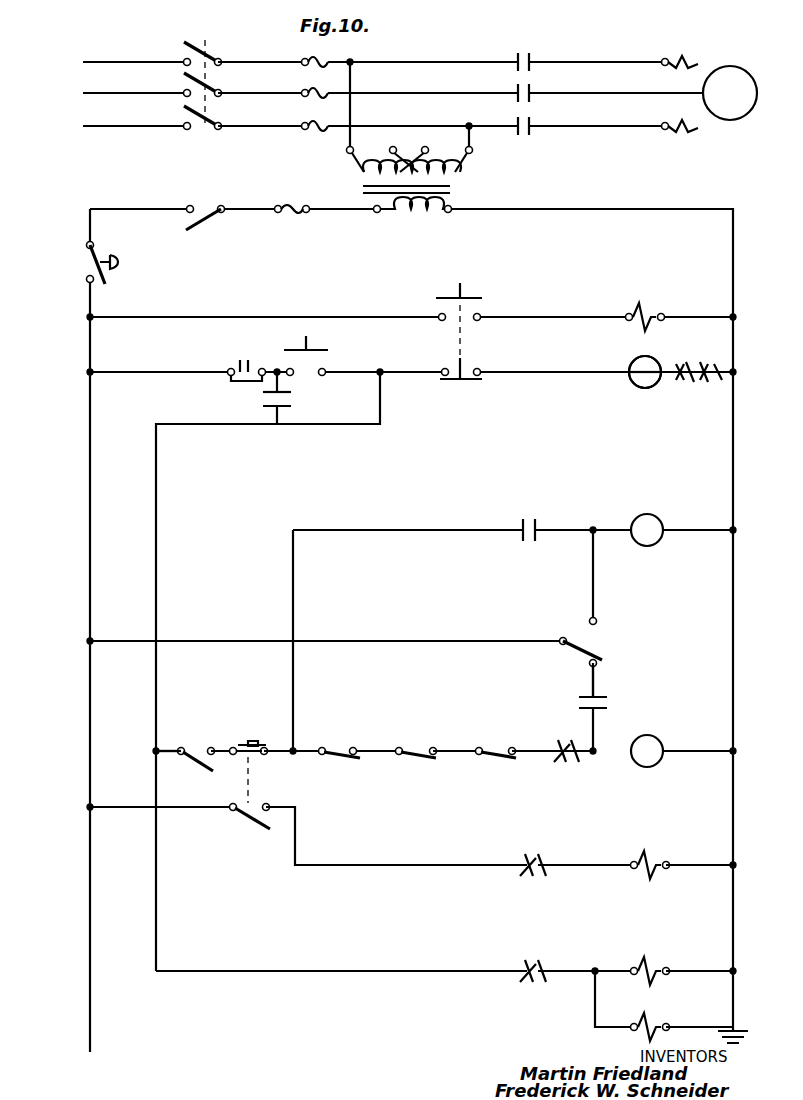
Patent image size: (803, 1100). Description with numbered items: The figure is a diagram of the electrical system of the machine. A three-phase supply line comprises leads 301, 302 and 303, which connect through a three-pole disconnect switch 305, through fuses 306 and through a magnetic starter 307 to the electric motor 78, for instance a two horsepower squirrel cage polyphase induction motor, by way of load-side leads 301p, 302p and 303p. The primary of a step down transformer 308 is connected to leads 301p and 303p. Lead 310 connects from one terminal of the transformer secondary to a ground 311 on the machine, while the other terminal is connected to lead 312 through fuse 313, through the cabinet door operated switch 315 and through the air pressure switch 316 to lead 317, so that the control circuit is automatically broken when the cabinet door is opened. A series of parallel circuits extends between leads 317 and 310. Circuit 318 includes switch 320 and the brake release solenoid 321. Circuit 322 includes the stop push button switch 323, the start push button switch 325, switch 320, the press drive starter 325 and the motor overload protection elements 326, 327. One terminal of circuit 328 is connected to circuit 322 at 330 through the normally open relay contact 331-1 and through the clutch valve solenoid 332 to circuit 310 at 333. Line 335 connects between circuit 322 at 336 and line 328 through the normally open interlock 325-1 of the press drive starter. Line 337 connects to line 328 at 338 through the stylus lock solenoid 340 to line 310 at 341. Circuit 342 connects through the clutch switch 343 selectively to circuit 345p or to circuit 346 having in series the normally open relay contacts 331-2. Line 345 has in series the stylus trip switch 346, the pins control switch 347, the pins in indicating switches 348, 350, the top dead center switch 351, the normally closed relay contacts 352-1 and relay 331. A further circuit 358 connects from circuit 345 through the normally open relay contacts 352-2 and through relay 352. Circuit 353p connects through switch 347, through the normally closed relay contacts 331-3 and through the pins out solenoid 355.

The lead 301 is at (106, 62).
The lead 302 is at (98, 93).
The lead 303 is at (98, 126).
The three-pole disconnect switch 305 is at (205, 40).
The fuses 306 is at (293, 124).
The lead 301' 301p is at (423, 47).
The lead 302' 302p is at (423, 80).
The lead 303' 303p is at (423, 113).
The magnetic starter 307 is at (535, 42).
The electric motor 78 is at (730, 82).
The step down transformer 308 is at (458, 172).
The lead 310 is at (668, 208).
The lead 312 is at (350, 192).
The fuse 313 is at (294, 211).
The cabinet door operated switch 315 is at (205, 192).
The air pressure switch 316 is at (88, 258).
The lead 317 is at (90, 500).
The circuit 318 is at (258, 316).
The switch 320 is at (480, 316).
The brake release solenoid 321 is at (652, 300).
The circuit 322 is at (96, 372).
The contacts 323 is at (243, 368).
The start push button switch / press drive starter 325 is at (312, 360).
The normally open interlock 325-1 is at (262, 400).
The motor overload protection element 326 is at (677, 366).
The motor overload protection element 327 is at (708, 384).
The circuit 328 is at (329, 424).
The connection point 330 is at (380, 372).
The relay 331 is at (648, 750).
The normally open relay contact 331-1 is at (540, 968).
The normally open relay contacts 331-2 is at (603, 700).
The normally closed relay contacts 331-3 is at (547, 854).
The clutch valve solenoid 332 is at (658, 962).
The connection point 333 is at (738, 976).
The line 335 is at (280, 412).
The connection point 336 is at (274, 370).
The line 337 is at (594, 1007).
The connection point 338 is at (597, 968).
The stylus lock solenoid 340 is at (642, 1036).
The connection point 341 is at (740, 1028).
The ground 311 is at (736, 1038).
The circuit 342 is at (232, 626).
The clutch switch 343 is at (586, 640).
The line 345 is at (170, 754).
The circuit 345' 345p is at (596, 592).
The circuit / stylus trip switch 346 is at (199, 740).
The pins control switch 347 is at (250, 740).
The pins in indicating switch 348 is at (332, 746).
The pins in indicating switch 350 is at (417, 734).
The top dead center switch 351 is at (500, 740).
The relay 352 is at (645, 520).
The normally closed relay contacts 352-1 is at (572, 760).
The normally open relay contacts 352-2 is at (533, 502).
The circuit 353' 353p is at (118, 806).
The pins out solenoid 355 is at (654, 850).
The conductor 358 is at (292, 532).